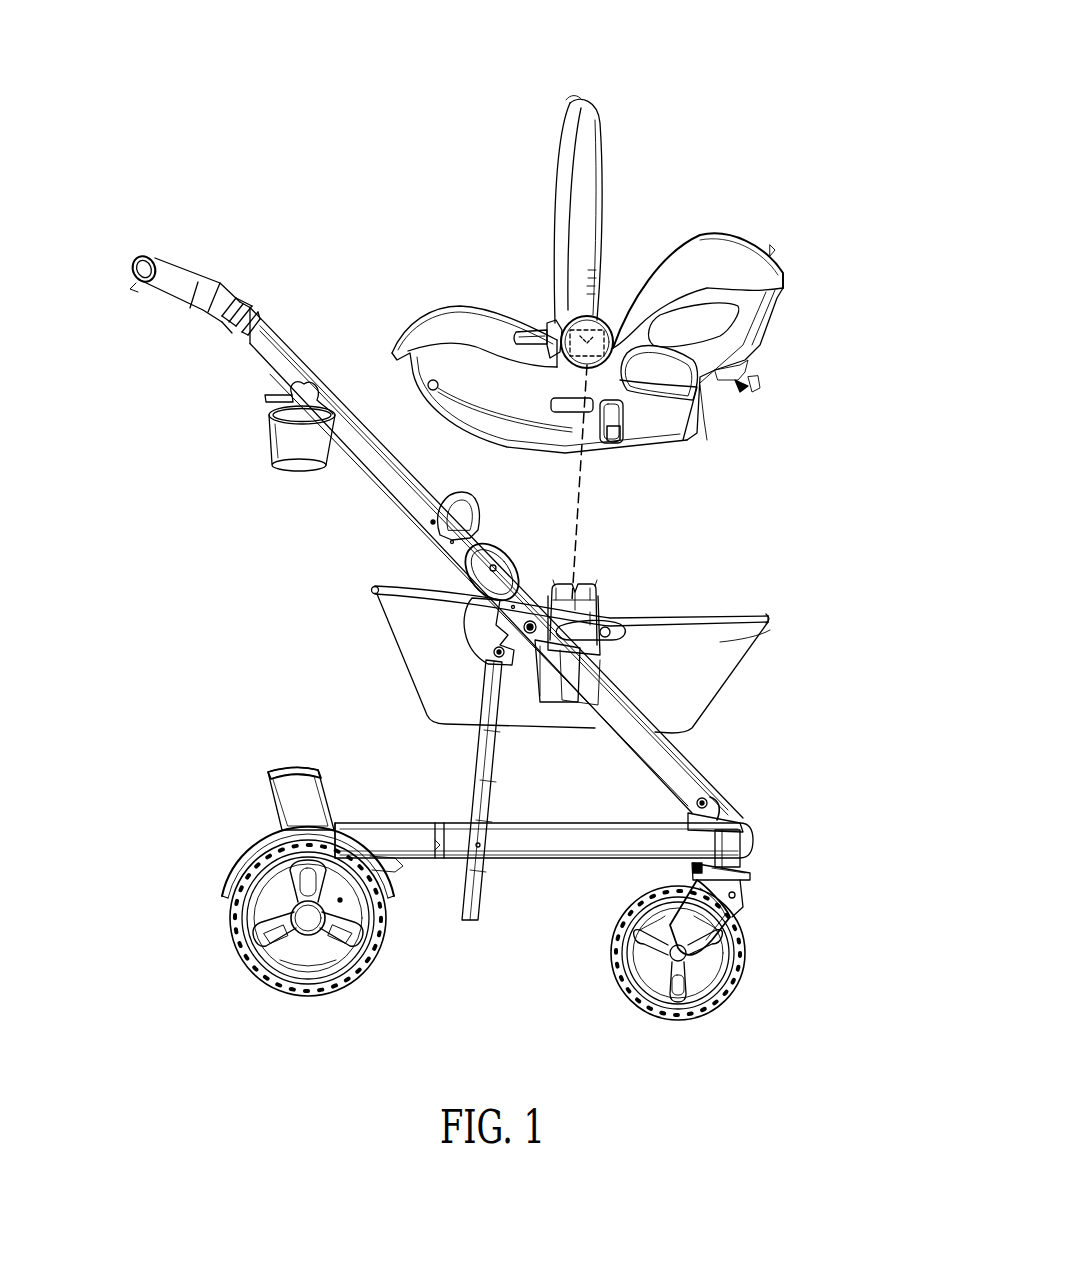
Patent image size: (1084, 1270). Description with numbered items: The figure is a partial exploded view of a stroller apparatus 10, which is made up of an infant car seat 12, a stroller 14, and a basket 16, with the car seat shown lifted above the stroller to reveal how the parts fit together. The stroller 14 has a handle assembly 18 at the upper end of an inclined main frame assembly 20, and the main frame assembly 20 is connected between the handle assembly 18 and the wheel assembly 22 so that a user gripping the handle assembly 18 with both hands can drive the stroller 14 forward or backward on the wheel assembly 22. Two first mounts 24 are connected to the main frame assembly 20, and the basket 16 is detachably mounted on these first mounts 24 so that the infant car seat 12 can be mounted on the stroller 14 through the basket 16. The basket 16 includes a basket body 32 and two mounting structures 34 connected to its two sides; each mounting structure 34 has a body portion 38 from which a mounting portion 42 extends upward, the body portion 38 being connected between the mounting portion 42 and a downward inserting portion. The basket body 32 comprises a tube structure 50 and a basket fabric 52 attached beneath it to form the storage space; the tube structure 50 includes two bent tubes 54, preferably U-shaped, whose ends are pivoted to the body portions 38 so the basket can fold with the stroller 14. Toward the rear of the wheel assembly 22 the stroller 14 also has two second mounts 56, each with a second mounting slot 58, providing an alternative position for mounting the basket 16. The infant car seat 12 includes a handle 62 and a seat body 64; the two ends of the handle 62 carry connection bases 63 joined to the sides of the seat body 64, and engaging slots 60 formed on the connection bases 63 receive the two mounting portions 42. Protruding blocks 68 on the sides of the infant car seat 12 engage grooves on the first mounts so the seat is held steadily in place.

The stroller apparatus 10 is at (729, 84).
The infant car seat 12 is at (755, 244).
The stroller 14 is at (150, 255).
The basket 16 is at (366, 589).
The handle assembly 18 is at (272, 358).
The main frame assembly 20 is at (706, 792).
The wheel assembly 22 is at (546, 850).
The first mount 24 is at (545, 678).
The basket body 32 is at (853, 585).
The mounting structure 34 is at (558, 582).
The body portion 38 is at (606, 630).
The mounting portion 42 is at (598, 596).
The tube structure 50 is at (770, 614).
The basket fabric 52 is at (720, 642).
The bent tube 54 is at (400, 592).
The second mount 56 is at (290, 802).
The second mounting slot 58 is at (296, 768).
The engaging slot 60 is at (560, 336).
The handle 62 is at (582, 150).
The connection base 63 is at (610, 322).
The seat body 64 is at (680, 258).
The protruding block 68 is at (613, 442).